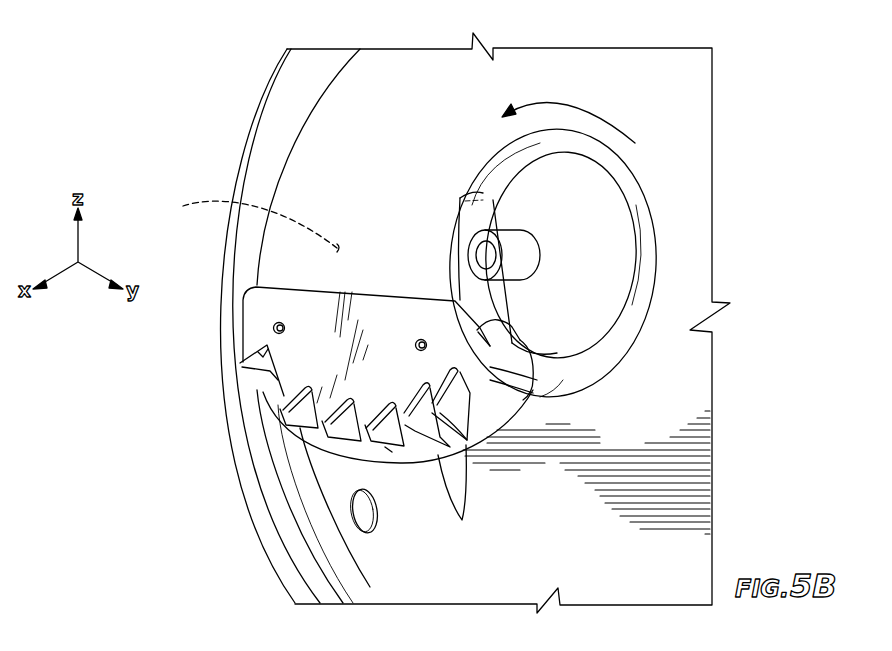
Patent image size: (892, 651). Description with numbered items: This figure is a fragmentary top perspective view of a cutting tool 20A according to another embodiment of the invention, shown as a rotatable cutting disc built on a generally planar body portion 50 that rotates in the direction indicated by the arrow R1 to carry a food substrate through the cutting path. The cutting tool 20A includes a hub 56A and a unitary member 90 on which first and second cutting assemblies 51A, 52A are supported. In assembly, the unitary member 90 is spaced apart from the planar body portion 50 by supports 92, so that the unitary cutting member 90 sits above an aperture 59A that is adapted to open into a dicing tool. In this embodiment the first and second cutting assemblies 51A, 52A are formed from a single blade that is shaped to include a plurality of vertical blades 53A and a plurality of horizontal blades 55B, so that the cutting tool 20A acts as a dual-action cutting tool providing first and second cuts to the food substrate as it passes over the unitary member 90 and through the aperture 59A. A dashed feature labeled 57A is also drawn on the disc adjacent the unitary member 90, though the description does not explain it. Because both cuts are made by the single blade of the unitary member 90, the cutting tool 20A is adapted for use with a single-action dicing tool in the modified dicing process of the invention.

The cutting tool 20A is at (180, 468).
The hidden recess 57A is at (254, 326).
The unitary member 90 is at (250, 334).
The supports 92 is at (274, 324).
The second cutting assembly 52A is at (335, 422).
The vertical blades 53A is at (302, 462).
The aperture 59A is at (357, 455).
The horizontal blades 55B is at (393, 450).
The first cutting assembly 51A is at (453, 500).
The hub 56A is at (523, 268).
The arrow indicating direction of rotation R1 is at (577, 105).
The planar body portion 50 is at (538, 529).